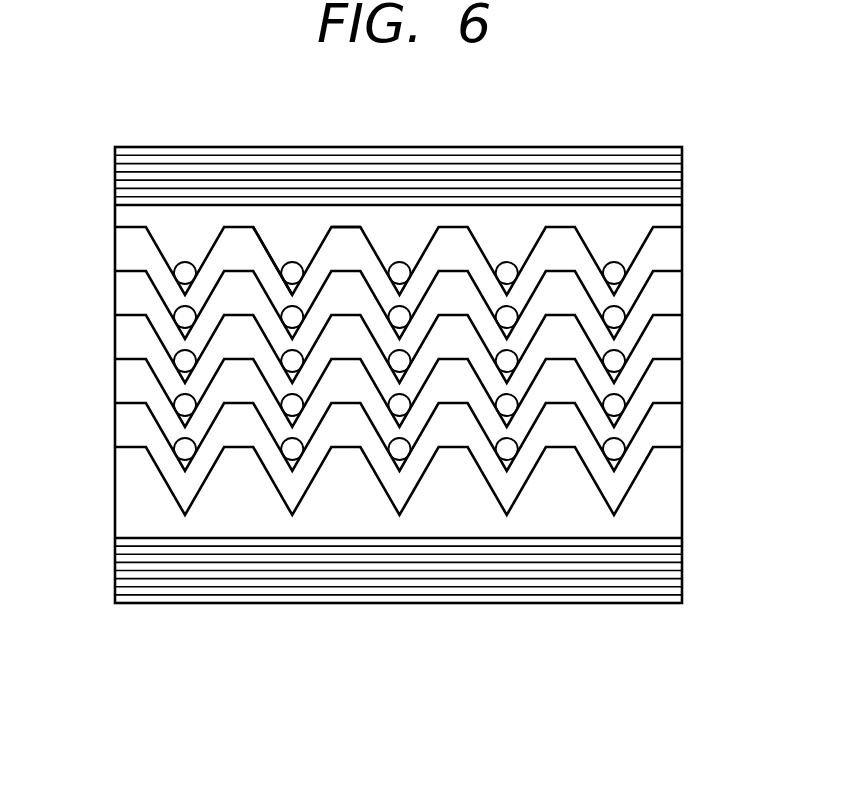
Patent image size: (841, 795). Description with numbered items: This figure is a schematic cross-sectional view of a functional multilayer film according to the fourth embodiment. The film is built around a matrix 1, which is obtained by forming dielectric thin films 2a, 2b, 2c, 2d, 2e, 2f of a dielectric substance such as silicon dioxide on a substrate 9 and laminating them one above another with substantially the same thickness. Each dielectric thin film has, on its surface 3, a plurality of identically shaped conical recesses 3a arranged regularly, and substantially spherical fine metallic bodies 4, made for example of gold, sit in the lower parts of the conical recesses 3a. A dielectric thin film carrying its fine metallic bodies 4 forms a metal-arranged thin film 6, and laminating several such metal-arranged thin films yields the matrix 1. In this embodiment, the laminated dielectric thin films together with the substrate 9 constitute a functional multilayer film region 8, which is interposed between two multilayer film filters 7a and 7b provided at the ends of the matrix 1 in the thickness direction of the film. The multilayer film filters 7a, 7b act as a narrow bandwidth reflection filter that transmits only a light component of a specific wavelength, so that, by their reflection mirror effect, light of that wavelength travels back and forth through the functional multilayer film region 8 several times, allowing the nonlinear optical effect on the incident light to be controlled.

The matrix 1 is at (106, 424).
The dielectric thin film 2a is at (683, 423).
The dielectric thin film 2b is at (683, 375).
The dielectric thin film 2c is at (683, 333).
The dielectric thin film 2d is at (683, 292).
The dielectric thin film 2e is at (683, 248).
The layer 2f is at (683, 213).
The surface 3 is at (344, 227).
The conical recess 3a is at (265, 242).
The fine metallic body 4 is at (507, 262).
The metal-arranged thin film 6 is at (115, 245).
The multilayer film filter 7a is at (115, 560).
The multilayer film filter 7b is at (115, 170).
The functional multilayer film region 8 is at (107, 204).
The substrate 9 is at (683, 488).